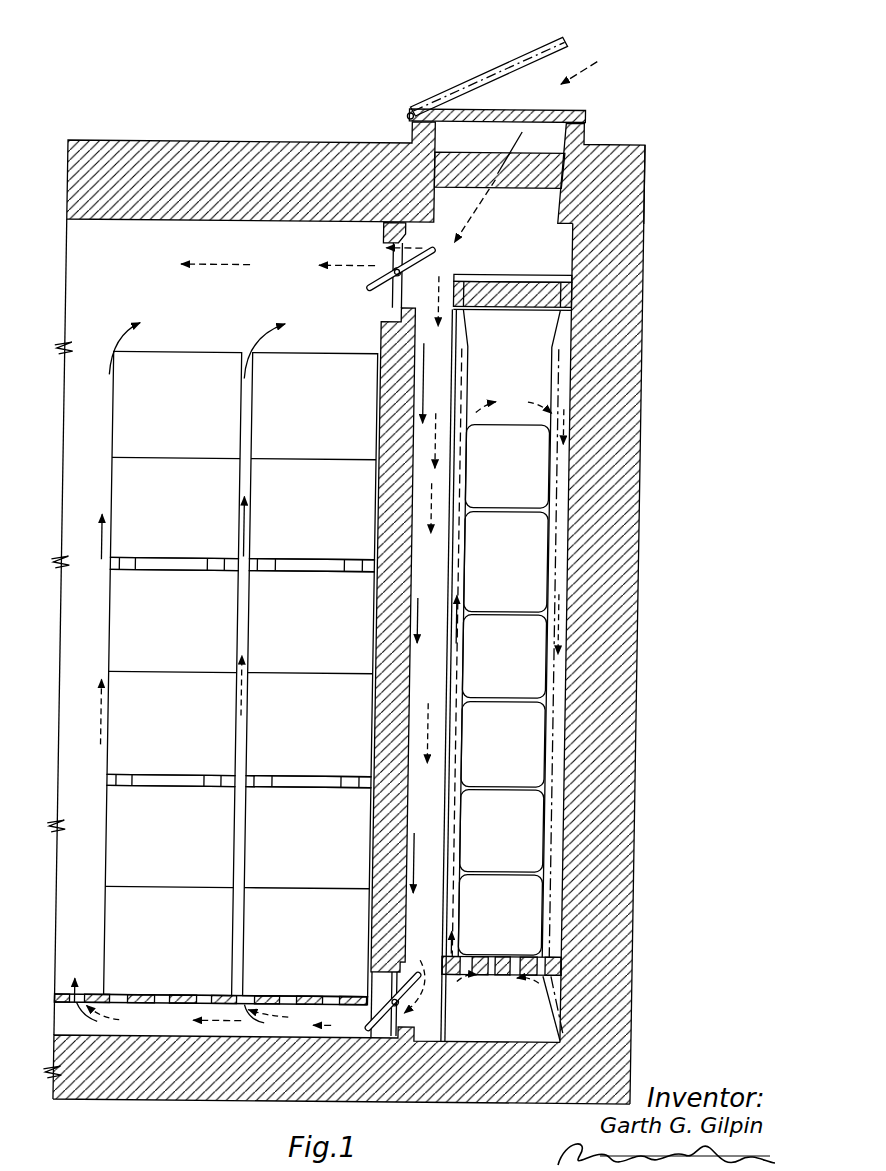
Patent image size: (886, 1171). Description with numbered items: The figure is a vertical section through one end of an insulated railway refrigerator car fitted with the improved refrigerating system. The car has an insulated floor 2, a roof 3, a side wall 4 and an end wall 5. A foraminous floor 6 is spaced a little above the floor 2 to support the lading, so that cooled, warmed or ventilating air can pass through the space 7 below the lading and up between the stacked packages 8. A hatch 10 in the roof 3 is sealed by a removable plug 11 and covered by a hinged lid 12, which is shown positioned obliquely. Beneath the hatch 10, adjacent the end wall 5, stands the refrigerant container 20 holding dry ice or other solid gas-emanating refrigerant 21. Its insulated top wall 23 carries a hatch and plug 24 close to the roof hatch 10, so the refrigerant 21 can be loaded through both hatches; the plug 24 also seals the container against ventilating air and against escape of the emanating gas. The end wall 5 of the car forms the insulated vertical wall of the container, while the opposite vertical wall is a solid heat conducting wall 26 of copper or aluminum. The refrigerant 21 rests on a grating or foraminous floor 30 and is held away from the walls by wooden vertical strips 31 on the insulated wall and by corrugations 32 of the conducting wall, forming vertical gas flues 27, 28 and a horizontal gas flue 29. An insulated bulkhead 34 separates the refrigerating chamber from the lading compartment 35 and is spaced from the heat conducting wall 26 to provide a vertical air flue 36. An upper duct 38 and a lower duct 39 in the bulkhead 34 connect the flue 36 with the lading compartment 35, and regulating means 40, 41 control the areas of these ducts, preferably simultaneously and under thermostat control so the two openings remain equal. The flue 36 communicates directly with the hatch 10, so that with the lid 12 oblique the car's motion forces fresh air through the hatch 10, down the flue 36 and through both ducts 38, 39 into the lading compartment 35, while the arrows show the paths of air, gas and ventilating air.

The insulated floor 2 is at (208, 1058).
The roof 3 is at (298, 168).
The side wall 4 is at (68, 263).
The end wall 5 is at (602, 624).
The foraminous floor 6 is at (156, 993).
The space 7 is at (203, 1004).
The packages 8 is at (236, 673).
The hatch 10 is at (503, 184).
The removable plug 11 is at (499, 170).
The hinged lid 12 is at (492, 69).
The refrigerant container 20 is at (507, 678).
The refrigerant 21 is at (475, 694).
The top wall 23 is at (490, 273).
The hatch and plug 24 is at (512, 295).
The heat conducting wall 26 is at (455, 666).
The vertical gas flue 27 is at (430, 419).
The vertical gas flue 28 is at (564, 548).
The horizontal gas flue 29 is at (497, 992).
The grating or foraminous floor 30 is at (506, 953).
The vertical strips 31 is at (567, 579).
The corrugations 32 is at (459, 705).
The insulated bulkhead 34 is at (415, 645).
The lading compartment 35 is at (265, 312).
The vertical air flue 36 is at (426, 745).
The upper duct 38 is at (368, 284).
The lower duct 39 is at (385, 1023).
The regulating means 40 is at (372, 285).
The regulating means 41 is at (410, 971).